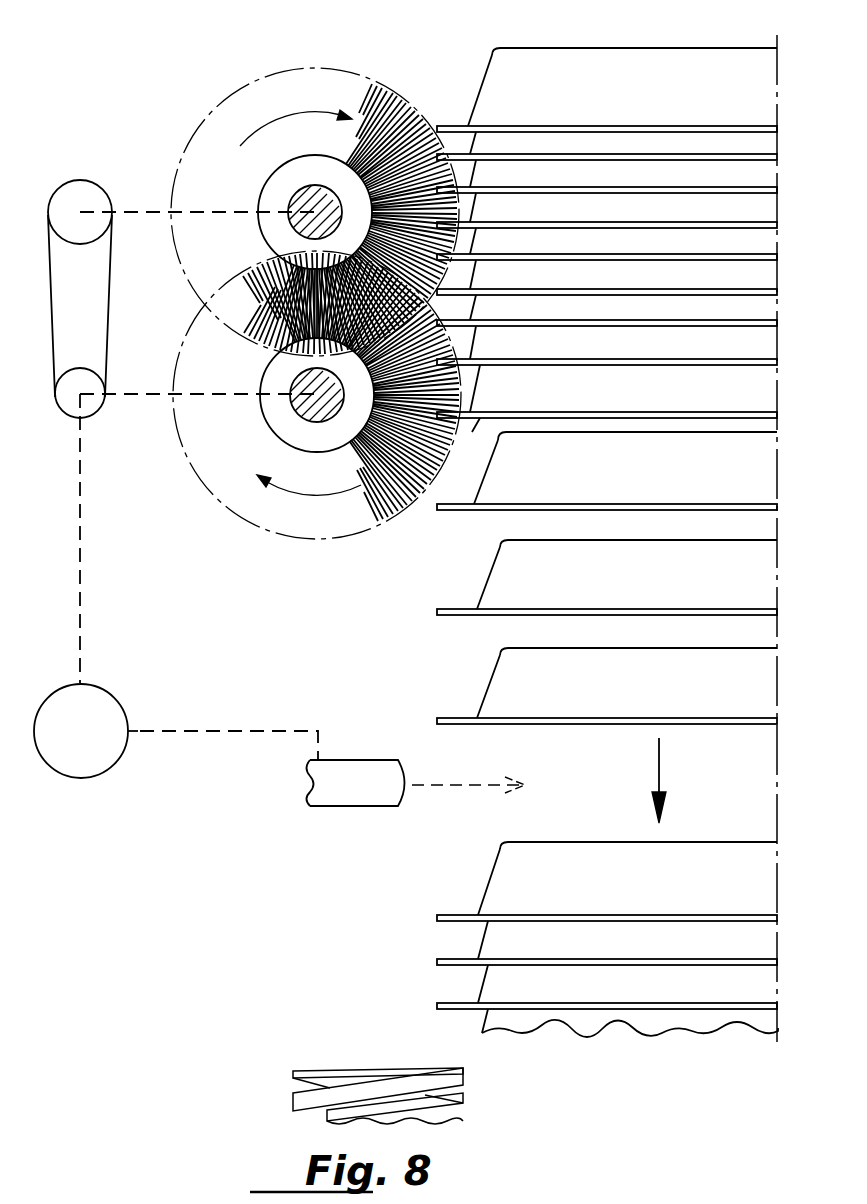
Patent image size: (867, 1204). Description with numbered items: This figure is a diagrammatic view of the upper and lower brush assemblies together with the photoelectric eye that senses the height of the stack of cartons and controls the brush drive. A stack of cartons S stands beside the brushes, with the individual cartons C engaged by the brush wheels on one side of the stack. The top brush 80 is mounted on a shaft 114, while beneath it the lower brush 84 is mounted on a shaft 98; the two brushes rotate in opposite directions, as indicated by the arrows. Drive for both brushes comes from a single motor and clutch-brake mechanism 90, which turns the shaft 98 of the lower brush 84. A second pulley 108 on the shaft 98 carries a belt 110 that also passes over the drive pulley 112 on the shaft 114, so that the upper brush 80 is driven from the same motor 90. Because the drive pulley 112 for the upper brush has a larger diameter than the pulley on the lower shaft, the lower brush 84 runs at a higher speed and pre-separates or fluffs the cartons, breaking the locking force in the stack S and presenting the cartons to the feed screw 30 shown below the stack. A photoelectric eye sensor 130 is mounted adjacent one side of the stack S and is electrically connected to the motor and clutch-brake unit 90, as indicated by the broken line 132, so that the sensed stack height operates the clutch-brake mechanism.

The rotary brush wheel 80 is at (245, 107).
The shaft 114 is at (313, 197).
The rotary brush wheel 84 is at (222, 467).
The shaft 98 is at (307, 408).
The drive pulley 112 is at (86, 198).
The second pulley 108 is at (67, 408).
The belt 110 is at (52, 283).
The motor and clutch-brake mechanism 90 is at (112, 706).
The broken line 132 is at (238, 736).
The photoelectric eye sensor 130 is at (357, 793).
The stack of cartons S is at (627, 68).
The cartons C is at (617, 1007).
The feed screw 30 is at (452, 1082).